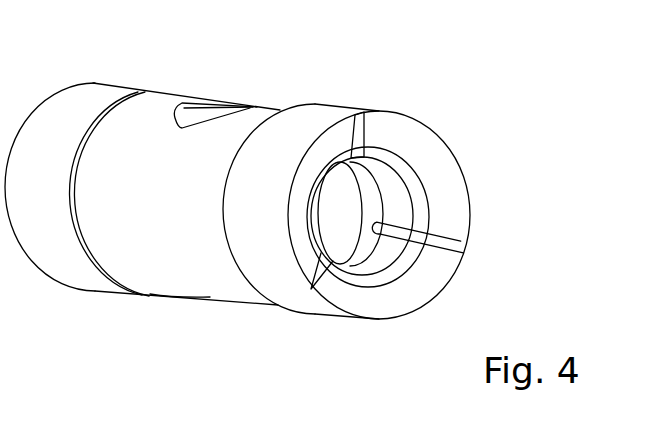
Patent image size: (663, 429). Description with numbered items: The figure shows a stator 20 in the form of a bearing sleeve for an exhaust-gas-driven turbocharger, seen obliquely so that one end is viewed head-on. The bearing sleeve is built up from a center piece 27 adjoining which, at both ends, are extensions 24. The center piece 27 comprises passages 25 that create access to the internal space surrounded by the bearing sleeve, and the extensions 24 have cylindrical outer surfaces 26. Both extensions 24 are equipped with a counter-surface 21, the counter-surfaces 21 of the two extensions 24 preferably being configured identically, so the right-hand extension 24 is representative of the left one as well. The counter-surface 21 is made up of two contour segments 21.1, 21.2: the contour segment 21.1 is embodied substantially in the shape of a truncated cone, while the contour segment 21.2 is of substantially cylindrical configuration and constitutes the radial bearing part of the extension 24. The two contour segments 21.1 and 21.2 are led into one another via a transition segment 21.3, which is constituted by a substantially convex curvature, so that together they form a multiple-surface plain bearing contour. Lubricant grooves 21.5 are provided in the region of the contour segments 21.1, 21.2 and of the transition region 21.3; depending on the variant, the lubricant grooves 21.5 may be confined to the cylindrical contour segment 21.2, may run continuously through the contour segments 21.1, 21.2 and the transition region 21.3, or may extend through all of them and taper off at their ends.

The stator 20 is at (284, 91).
The counter-surface 21 is at (489, 193).
The contour segment 21.1 is at (428, 283).
The contour segment 21.2 is at (405, 205).
The transition segment 21.3 is at (413, 175).
The lubricant groove 21.5 is at (447, 236).
The extension 24 is at (128, 80).
The passage 25 is at (216, 94).
The cylindrical outer surface 26 is at (92, 300).
The center piece 27 is at (198, 297).